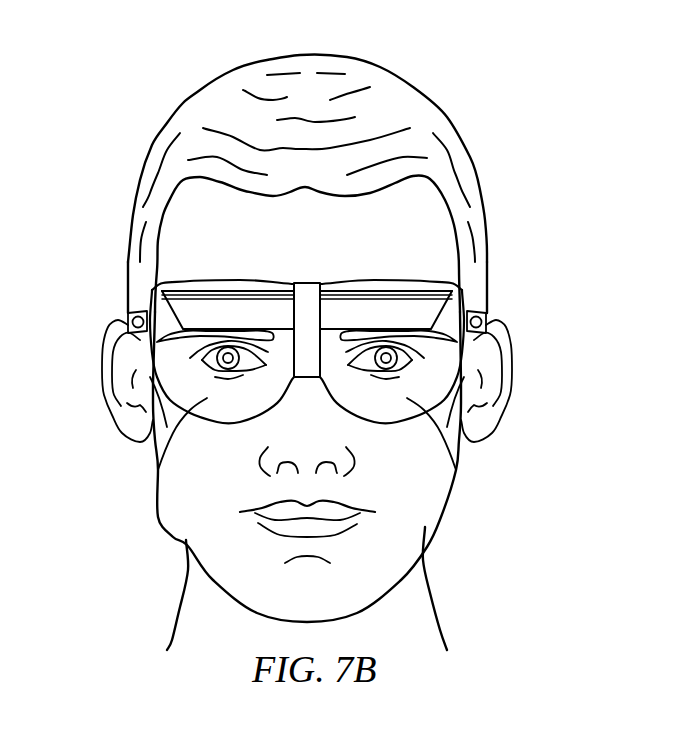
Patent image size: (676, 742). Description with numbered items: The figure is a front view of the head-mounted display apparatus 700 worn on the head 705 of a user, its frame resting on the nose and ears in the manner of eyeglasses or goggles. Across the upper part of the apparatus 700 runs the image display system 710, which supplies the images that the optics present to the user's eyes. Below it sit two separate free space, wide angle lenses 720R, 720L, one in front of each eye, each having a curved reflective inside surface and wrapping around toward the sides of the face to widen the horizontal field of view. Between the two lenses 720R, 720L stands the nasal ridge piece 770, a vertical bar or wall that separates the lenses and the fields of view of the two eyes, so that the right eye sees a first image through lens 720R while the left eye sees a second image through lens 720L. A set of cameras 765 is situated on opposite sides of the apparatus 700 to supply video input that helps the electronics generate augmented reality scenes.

The HMD apparatus 700 is at (312, 362).
The head 705 is at (137, 197).
The image display system 710 is at (375, 289).
The right lens 720R is at (157, 462).
The left lens 720L is at (461, 467).
The cameras 765 is at (128, 314).
The nasal ridge piece 770 is at (300, 380).